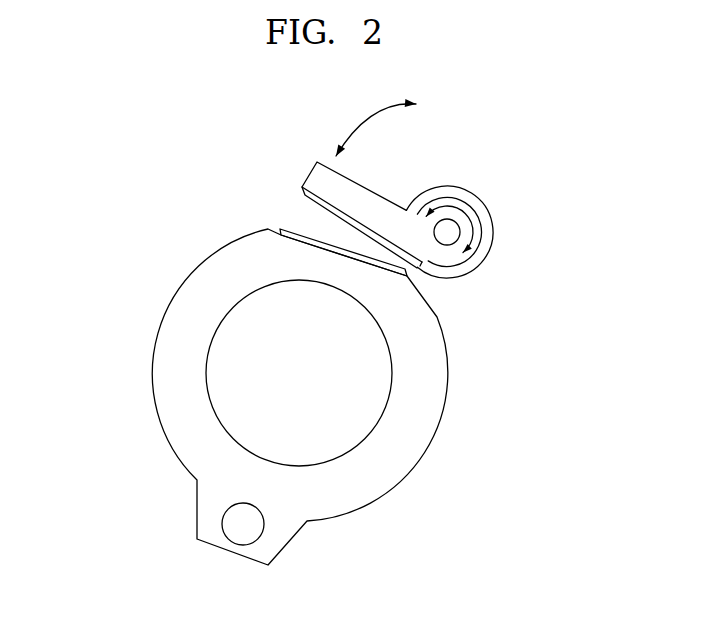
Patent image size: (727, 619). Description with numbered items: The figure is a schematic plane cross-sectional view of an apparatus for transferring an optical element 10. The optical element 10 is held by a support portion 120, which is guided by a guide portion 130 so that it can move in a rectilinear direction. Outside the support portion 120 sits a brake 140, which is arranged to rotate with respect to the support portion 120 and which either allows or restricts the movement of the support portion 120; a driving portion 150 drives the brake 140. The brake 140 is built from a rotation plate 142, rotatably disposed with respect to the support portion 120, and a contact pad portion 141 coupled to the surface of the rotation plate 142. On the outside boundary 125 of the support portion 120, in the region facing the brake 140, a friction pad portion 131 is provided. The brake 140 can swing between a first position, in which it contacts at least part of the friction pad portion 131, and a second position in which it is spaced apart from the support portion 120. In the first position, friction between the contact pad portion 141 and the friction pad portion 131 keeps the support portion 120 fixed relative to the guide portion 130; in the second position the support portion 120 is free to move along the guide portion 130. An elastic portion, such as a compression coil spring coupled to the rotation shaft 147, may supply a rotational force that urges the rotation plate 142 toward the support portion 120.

The optical element 10 is at (233, 345).
The support portion 120 is at (148, 433).
The outside boundary 125 is at (437, 316).
The guide portion 130 is at (228, 517).
The friction pad portion 131 is at (280, 229).
The brake 140 is at (291, 84).
The contact pad portion 141 is at (300, 191).
The rotation plate 142 is at (316, 166).
The rotation shaft 147 is at (450, 233).
The driving portion 150 is at (492, 210).